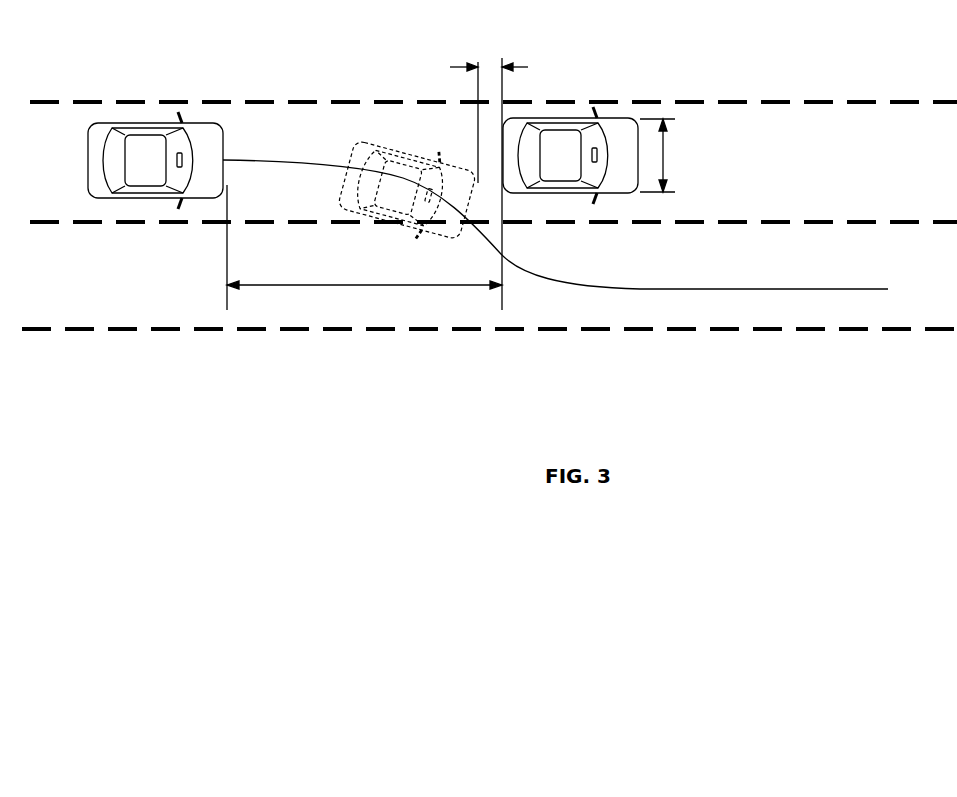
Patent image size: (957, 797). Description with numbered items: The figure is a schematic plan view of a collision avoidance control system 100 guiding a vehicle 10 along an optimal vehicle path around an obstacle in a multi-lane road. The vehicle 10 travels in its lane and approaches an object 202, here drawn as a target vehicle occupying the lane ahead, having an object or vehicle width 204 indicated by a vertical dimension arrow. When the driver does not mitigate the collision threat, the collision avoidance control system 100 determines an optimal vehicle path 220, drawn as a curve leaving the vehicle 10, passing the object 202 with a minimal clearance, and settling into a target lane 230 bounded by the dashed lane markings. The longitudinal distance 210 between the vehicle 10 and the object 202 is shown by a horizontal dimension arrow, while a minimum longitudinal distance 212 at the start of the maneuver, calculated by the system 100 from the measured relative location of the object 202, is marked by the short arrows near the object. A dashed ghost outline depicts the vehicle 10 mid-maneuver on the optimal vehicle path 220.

The collision avoidance control system 100 is at (98, 123).
The vehicle 10 is at (154, 126).
The object 202 is at (608, 118).
The object or vehicle width 204 is at (663, 157).
The longitudinal distance 210 is at (380, 288).
The minimum longitudinal distance 212 is at (462, 66).
The optimal vehicle path 220 is at (670, 292).
The target lane 230 is at (868, 332).